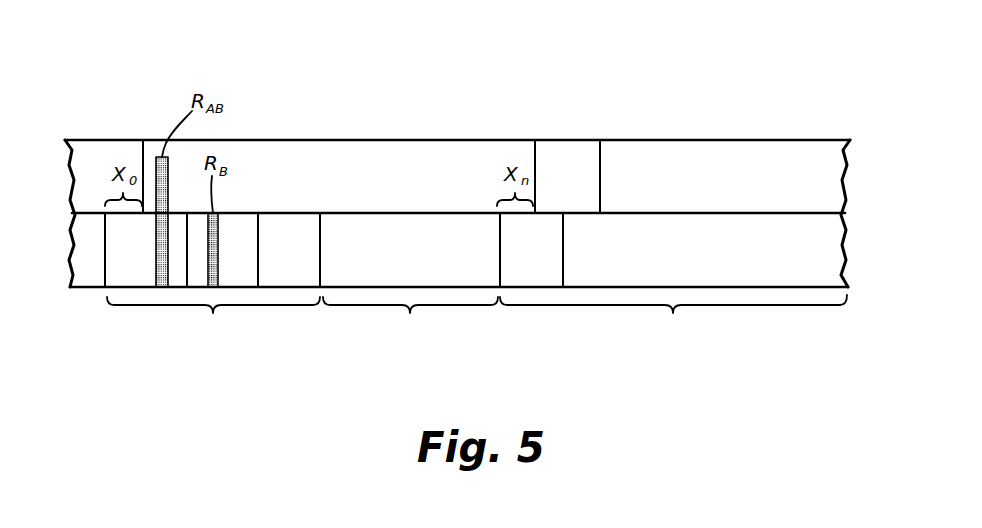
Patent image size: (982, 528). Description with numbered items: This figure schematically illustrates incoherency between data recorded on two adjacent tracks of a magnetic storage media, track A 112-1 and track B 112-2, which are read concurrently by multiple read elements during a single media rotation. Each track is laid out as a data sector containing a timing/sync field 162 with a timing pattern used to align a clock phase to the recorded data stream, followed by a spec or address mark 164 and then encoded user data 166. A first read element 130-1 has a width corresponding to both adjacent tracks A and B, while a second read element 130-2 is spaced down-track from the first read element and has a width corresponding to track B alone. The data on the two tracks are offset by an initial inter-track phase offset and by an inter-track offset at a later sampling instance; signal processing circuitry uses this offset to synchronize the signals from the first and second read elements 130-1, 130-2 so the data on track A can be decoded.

The first read element 130-1 is at (155, 170).
The second read element 130-2 is at (221, 227).
The track A 112-1 is at (644, 160).
The track B 112-2 is at (609, 239).
The timing/sync field 162 is at (300, 307).
The spec mark 164 is at (475, 307).
The encoded user data 166 is at (790, 307).